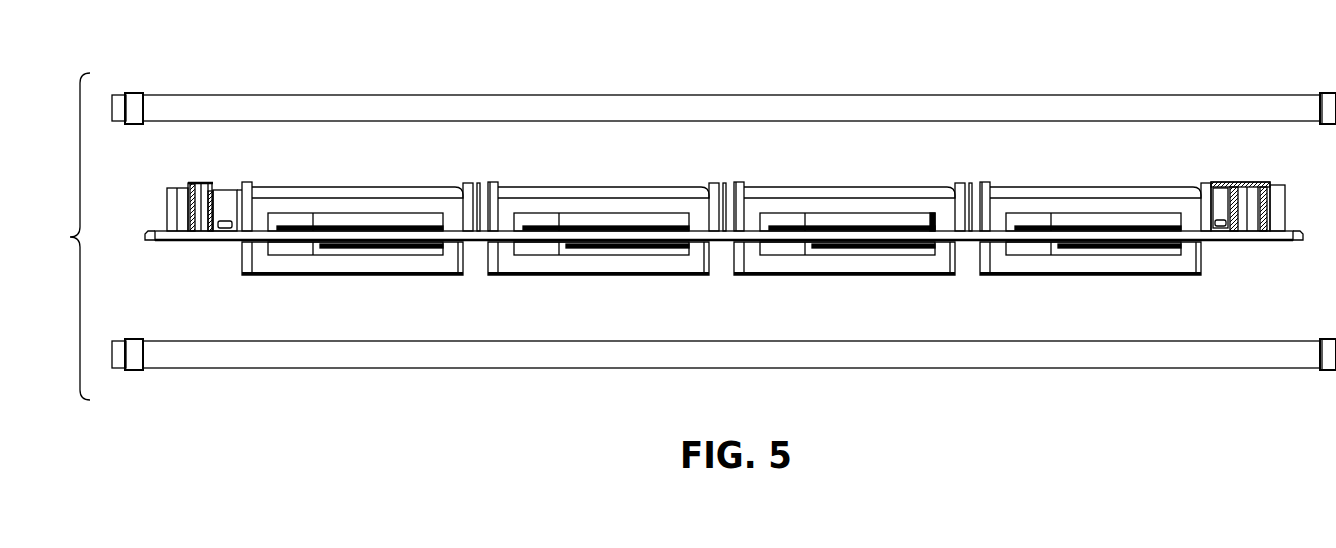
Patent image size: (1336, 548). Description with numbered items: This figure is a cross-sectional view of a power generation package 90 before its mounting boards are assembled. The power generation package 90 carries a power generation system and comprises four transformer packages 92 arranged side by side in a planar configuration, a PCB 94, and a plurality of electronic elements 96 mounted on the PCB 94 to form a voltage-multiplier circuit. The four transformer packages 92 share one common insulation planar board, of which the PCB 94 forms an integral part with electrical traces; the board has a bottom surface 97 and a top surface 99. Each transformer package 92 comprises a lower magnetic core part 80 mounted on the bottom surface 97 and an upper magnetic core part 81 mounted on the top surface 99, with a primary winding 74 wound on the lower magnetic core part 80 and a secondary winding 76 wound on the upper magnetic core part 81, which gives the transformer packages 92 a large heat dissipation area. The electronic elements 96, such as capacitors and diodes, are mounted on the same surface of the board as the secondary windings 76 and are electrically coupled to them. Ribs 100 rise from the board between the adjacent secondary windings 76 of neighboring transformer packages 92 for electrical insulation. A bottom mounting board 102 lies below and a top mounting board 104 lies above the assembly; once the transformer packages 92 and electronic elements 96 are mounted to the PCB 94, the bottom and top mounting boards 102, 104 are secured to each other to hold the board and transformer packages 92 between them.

The primary winding 74 is at (325, 243).
The secondary winding 76 is at (293, 226).
The lower magnetic core part 80 is at (355, 256).
The upper magnetic core part 81 is at (347, 215).
The power generation package 90 is at (59, 236).
The transformer package 92 is at (400, 187).
The PCB 94 is at (172, 236).
The electronic element 96 is at (231, 208).
The bottom surface 97 is at (1225, 241).
The top surface 99 is at (933, 214).
The rib 100 is at (491, 183).
The bottom mounting board 102 is at (226, 353).
The top mounting board 104 is at (248, 105).